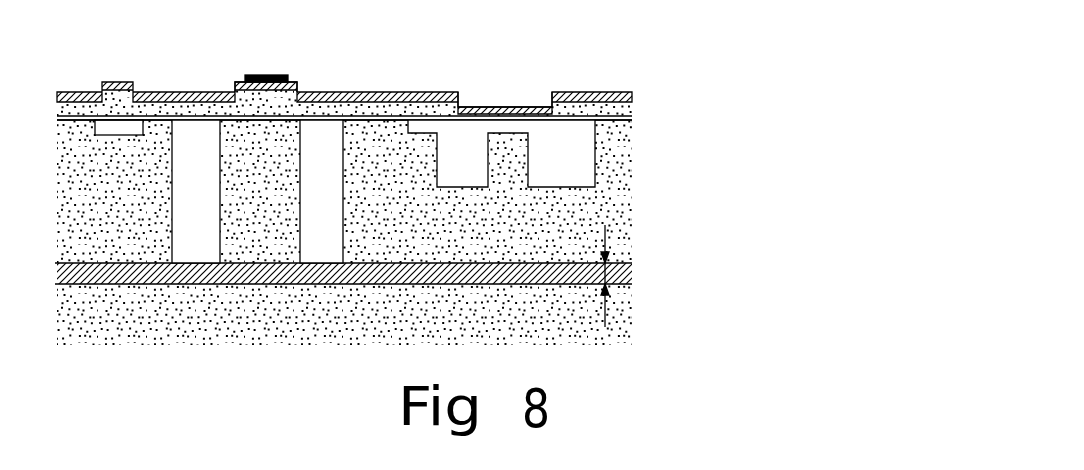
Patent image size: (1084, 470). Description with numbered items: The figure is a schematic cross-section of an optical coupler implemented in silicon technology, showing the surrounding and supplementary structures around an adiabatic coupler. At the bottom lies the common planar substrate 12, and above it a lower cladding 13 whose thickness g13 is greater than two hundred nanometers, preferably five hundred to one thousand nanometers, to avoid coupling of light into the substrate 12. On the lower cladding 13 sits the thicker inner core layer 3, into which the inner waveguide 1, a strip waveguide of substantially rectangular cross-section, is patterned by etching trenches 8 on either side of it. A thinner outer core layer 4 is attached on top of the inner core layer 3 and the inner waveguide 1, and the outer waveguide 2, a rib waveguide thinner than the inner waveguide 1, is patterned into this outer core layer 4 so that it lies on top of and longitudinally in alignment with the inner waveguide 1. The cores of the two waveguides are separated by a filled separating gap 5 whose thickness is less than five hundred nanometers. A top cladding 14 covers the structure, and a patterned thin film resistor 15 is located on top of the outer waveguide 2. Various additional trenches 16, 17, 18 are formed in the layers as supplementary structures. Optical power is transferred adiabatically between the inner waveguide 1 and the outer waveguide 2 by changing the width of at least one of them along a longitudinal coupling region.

The inner waveguide 1 is at (263, 193).
The outer waveguide 2 is at (247, 99).
The inner core layer 3 is at (632, 202).
The outer core layer 4 is at (630, 110).
The gap 5 is at (305, 137).
The trenches 8 is at (205, 198).
The substrate 12 is at (628, 300).
The lower cladding 13 is at (632, 275).
The thickness of the lower cladding g13 is at (628, 258).
The top cladding 14 is at (603, 102).
The thin film resistor 15 is at (270, 73).
The additional trench 16 is at (124, 129).
The additional trench 17 is at (457, 165).
The additional trench 18 is at (503, 103).